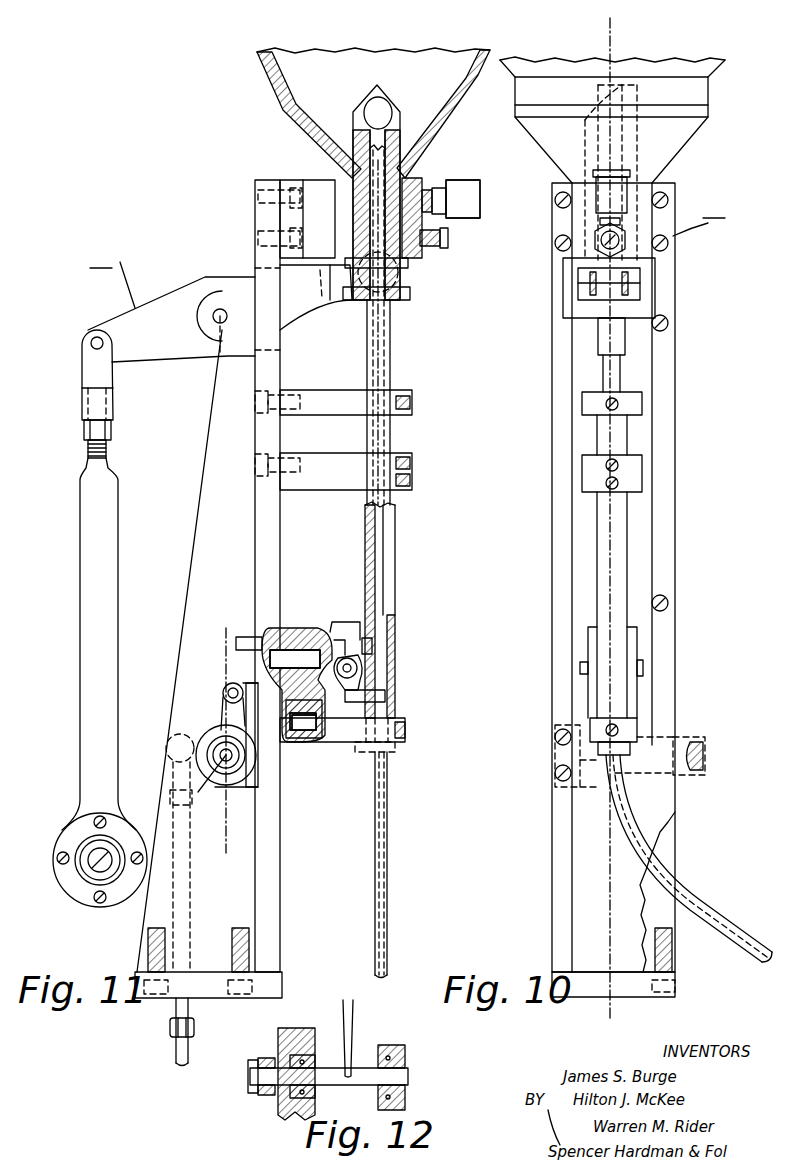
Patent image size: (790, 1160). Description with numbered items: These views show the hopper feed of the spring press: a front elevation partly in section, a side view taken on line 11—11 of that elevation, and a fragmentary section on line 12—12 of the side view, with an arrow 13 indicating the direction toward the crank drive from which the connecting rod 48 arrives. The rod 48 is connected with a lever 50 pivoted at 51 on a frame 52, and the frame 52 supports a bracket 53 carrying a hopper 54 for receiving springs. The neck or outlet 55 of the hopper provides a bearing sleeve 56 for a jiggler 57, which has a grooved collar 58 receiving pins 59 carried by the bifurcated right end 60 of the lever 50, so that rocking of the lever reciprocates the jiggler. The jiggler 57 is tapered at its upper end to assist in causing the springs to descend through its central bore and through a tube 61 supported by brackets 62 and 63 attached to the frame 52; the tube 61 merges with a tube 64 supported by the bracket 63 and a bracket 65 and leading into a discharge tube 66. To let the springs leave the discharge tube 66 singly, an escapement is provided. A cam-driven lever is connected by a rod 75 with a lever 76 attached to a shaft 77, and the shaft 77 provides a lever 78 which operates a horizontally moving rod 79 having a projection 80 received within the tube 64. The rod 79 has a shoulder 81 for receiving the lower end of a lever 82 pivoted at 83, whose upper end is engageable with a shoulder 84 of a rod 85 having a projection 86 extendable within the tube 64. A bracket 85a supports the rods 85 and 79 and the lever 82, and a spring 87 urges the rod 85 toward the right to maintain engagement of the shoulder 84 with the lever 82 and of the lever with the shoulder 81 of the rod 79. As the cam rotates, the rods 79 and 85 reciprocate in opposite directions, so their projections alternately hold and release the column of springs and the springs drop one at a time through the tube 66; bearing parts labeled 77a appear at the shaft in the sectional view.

In FIG. 10, the section line 11— 11 is at (610, 20).
In FIG. 11, the section line 12— 12 is at (224, 628).
In FIG. 11, the figure reference 13 is at (60, 568).
In FIG. 11, the connecting rod 48 is at (80, 730).
In FIG. 11, the lever 50 is at (175, 356).
In FIG. 11, the pivot 51 is at (215, 311).
In FIG. 11, the frame 52 is at (257, 197).
In FIG. 10, the frame 52 is at (552, 895).
In FIG. 12, the frame 52 is at (278, 1036).
In FIG. 11, the bracket 53 is at (302, 180).
In FIG. 11, the hopper 54 is at (263, 58).
In FIG. 10, the hopper 54 is at (720, 62).
In FIG. 11, the neck or outlet 55 is at (460, 130).
In FIG. 10, the neck or outlet 55 is at (700, 133).
In FIG. 11, the bearing sleeve 56 is at (353, 205).
In FIG. 10, the bearing sleeve 56 is at (611, 191).
In FIG. 11, the jiggler 57 is at (362, 110).
In FIG. 10, the jiggler 57 is at (622, 88).
In FIG. 11, the grooved collar 58 is at (412, 268).
In FIG. 10, the grooved collar 58 is at (640, 267).
In FIG. 11, the pins 59 is at (372, 300).
In FIG. 10, the pins 59 is at (640, 284).
In FIG. 11, the bifurcated right end 60 is at (318, 312).
In FIG. 10, the bifurcated right end 60 is at (650, 299).
In FIG. 11, the tube 61 is at (390, 322).
In FIG. 10, the tube 61 is at (620, 364).
In FIG. 11, the bracket 62 is at (345, 392).
In FIG. 10, the bracket 62 is at (642, 404).
In FIG. 11, the bracket 63 is at (345, 455).
In FIG. 10, the bracket 63 is at (642, 474).
In FIG. 11, the tube 64 is at (365, 548).
In FIG. 10, the tube 64 is at (627, 535).
In FIG. 11, the bracket 65 is at (355, 745).
In FIG. 10, the bracket 65 is at (637, 721).
In FIG. 11, the discharge tube 66 is at (375, 872).
In FIG. 10, the discharge tube 66 is at (695, 900).
In FIG. 11, the rod 75 is at (182, 893).
In FIG. 11, the lever 76 is at (188, 770).
In FIG. 10, the lever 76 is at (705, 742).
In FIG. 12, the lever 76 is at (255, 1094).
In FIG. 11, the shaft 77 is at (213, 790).
In FIG. 10, the shaft 77 is at (555, 757).
In FIG. 12, the shaft 77 is at (248, 1078).
In FIG. 11, the bearing block 77a is at (198, 867).
In FIG. 10, the bearing block 77a is at (572, 790).
In FIG. 12, the bearing block 77a is at (408, 1036).
In FIG. 11, the lever 78 is at (222, 708).
In FIG. 12, the lever 78 is at (350, 1024).
In FIG. 11, the horizontally moving rod 79 is at (238, 683).
In FIG. 11, the projection 80 is at (385, 700).
In FIG. 11, the shoulder 81 is at (345, 732).
In FIG. 11, the lever 82 is at (362, 682).
In FIG. 11, the pivot 83 is at (357, 665).
In FIG. 10, the pivot 83 is at (580, 668).
In FIG. 11, the shoulder 84 is at (345, 636).
In FIG. 11, the rod 85 is at (360, 630).
In FIG. 10, the bracket 85a is at (637, 637).
In FIG. 11, the projection 86 is at (375, 640).
In FIG. 11, the spring 87 is at (292, 628).